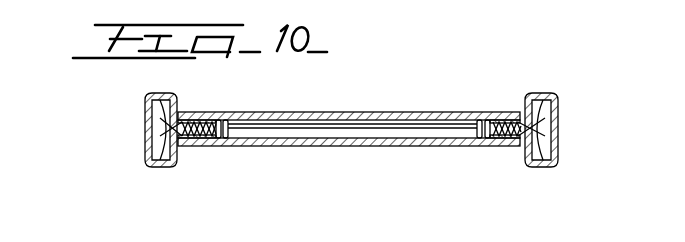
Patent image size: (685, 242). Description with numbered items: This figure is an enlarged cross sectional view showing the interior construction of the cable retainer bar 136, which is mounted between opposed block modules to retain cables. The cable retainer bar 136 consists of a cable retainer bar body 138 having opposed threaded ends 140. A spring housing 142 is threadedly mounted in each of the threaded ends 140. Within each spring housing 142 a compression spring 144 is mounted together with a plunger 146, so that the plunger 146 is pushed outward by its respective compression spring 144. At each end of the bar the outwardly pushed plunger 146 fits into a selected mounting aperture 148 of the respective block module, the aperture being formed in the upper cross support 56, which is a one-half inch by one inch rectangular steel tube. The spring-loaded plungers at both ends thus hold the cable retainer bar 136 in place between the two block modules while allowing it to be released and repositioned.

The upper cross support 56 is at (143, 122).
The cable retainer bar 136 is at (353, 111).
The cable retainer bar body 138 is at (397, 119).
The threaded ends 140 is at (216, 112).
The spring housing 142 is at (180, 123).
The compression spring 144 is at (200, 141).
The plunger 146 is at (168, 149).
The mounting aperture 148 is at (160, 97).